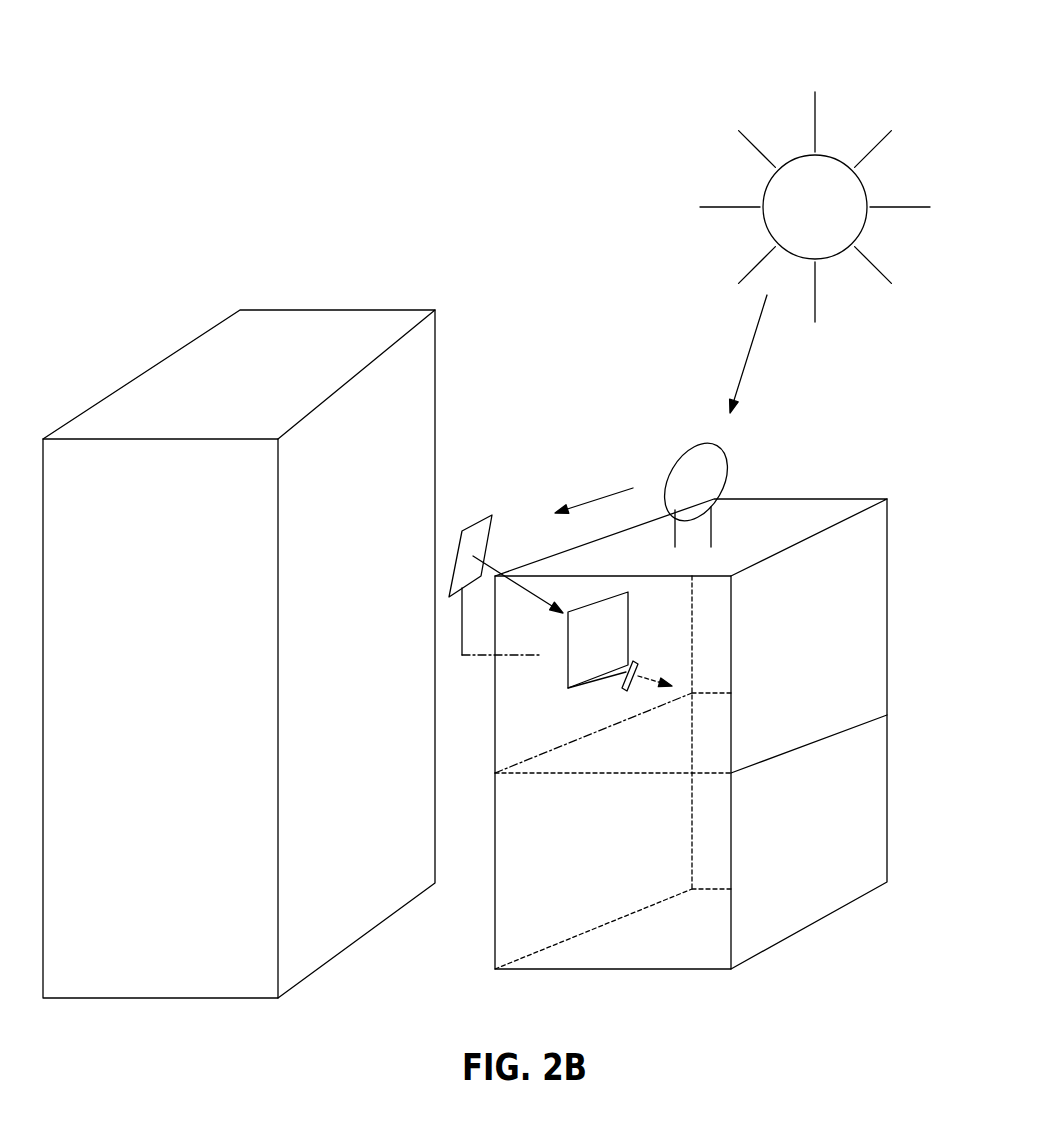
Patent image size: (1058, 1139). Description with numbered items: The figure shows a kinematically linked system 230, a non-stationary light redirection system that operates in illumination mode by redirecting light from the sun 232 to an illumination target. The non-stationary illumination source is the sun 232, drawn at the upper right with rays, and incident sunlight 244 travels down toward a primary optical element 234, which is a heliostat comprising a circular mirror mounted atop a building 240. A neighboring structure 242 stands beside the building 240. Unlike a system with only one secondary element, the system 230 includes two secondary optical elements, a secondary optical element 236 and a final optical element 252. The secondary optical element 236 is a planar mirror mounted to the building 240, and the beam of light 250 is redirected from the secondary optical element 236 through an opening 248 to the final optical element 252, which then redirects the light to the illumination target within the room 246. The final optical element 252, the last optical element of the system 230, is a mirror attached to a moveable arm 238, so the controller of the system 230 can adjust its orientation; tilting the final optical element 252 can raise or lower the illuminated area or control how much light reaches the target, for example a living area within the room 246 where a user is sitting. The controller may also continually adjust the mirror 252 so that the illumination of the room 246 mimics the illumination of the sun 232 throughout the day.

The kinematically linked system 230 is at (512, 120).
The sun 232 is at (868, 223).
The primary optical element 234 is at (725, 487).
The secondary optical element 236 is at (455, 547).
The arm 238 is at (602, 683).
The building 240 is at (830, 520).
The adjacent building 242 is at (332, 320).
The incident sunlight 244 is at (763, 356).
The room 246 is at (523, 722).
The window panel 248 is at (595, 613).
The beam of light 250 is at (575, 483).
The final optical element 252 is at (635, 685).